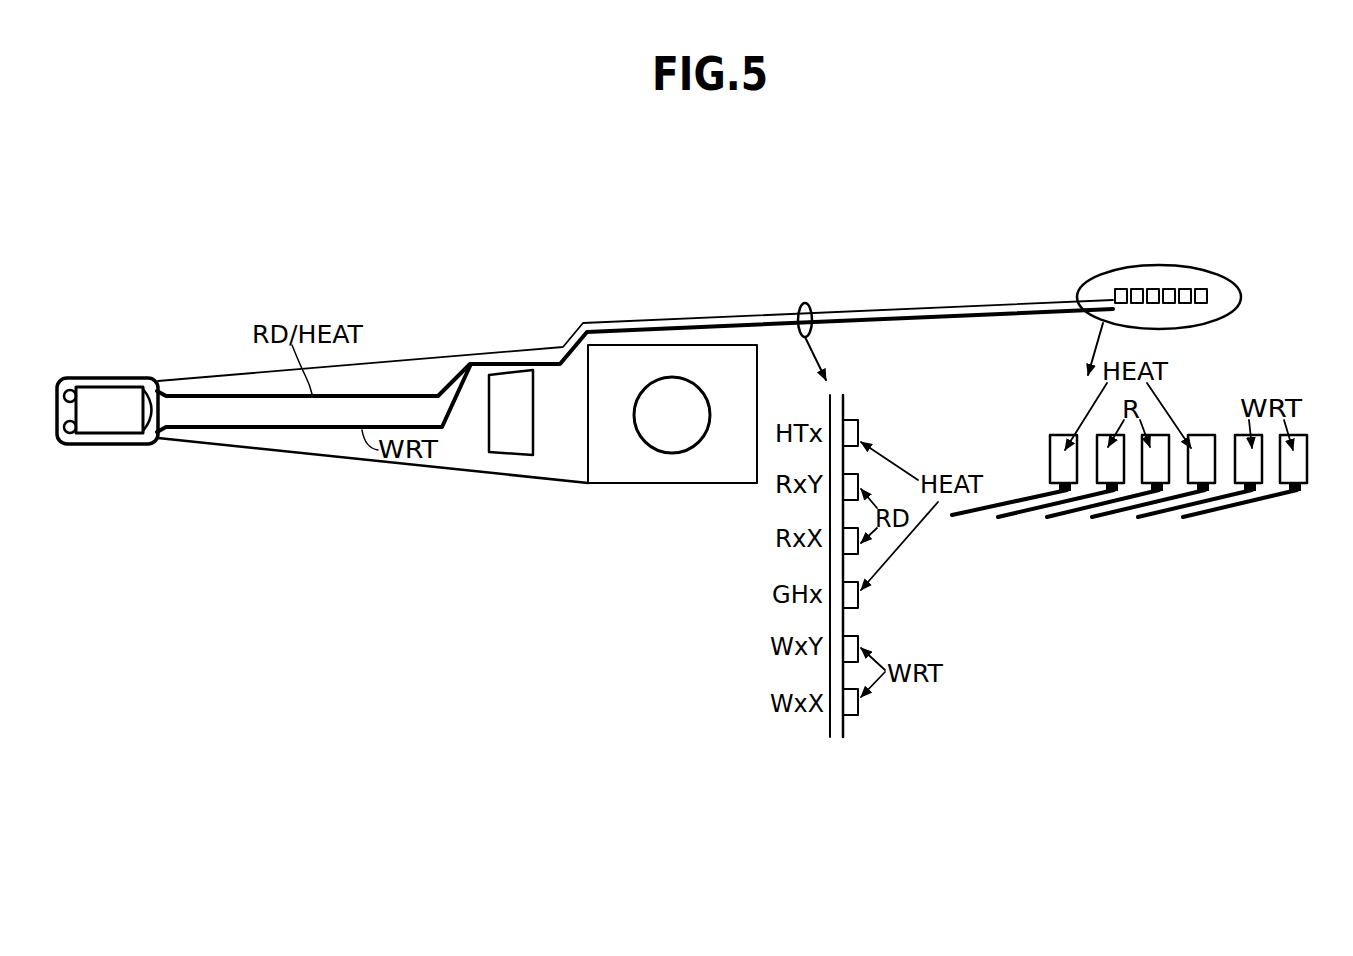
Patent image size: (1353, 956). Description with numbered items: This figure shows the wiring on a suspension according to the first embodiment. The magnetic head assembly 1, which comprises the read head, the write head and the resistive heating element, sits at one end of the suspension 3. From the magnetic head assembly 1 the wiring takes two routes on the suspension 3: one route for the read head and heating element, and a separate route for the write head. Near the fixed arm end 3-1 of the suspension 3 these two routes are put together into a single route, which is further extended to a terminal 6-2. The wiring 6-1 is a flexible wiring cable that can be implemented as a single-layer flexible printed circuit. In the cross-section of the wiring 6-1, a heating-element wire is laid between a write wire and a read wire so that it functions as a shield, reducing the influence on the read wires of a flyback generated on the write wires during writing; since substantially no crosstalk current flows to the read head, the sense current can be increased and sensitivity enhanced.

The magnetic head assembly 1 is at (108, 428).
The suspension 3 is at (453, 457).
The fixed arm end 3-1 is at (632, 467).
The wiring (FPC) 6-1 is at (808, 303).
The terminal 6-2 is at (1100, 277).